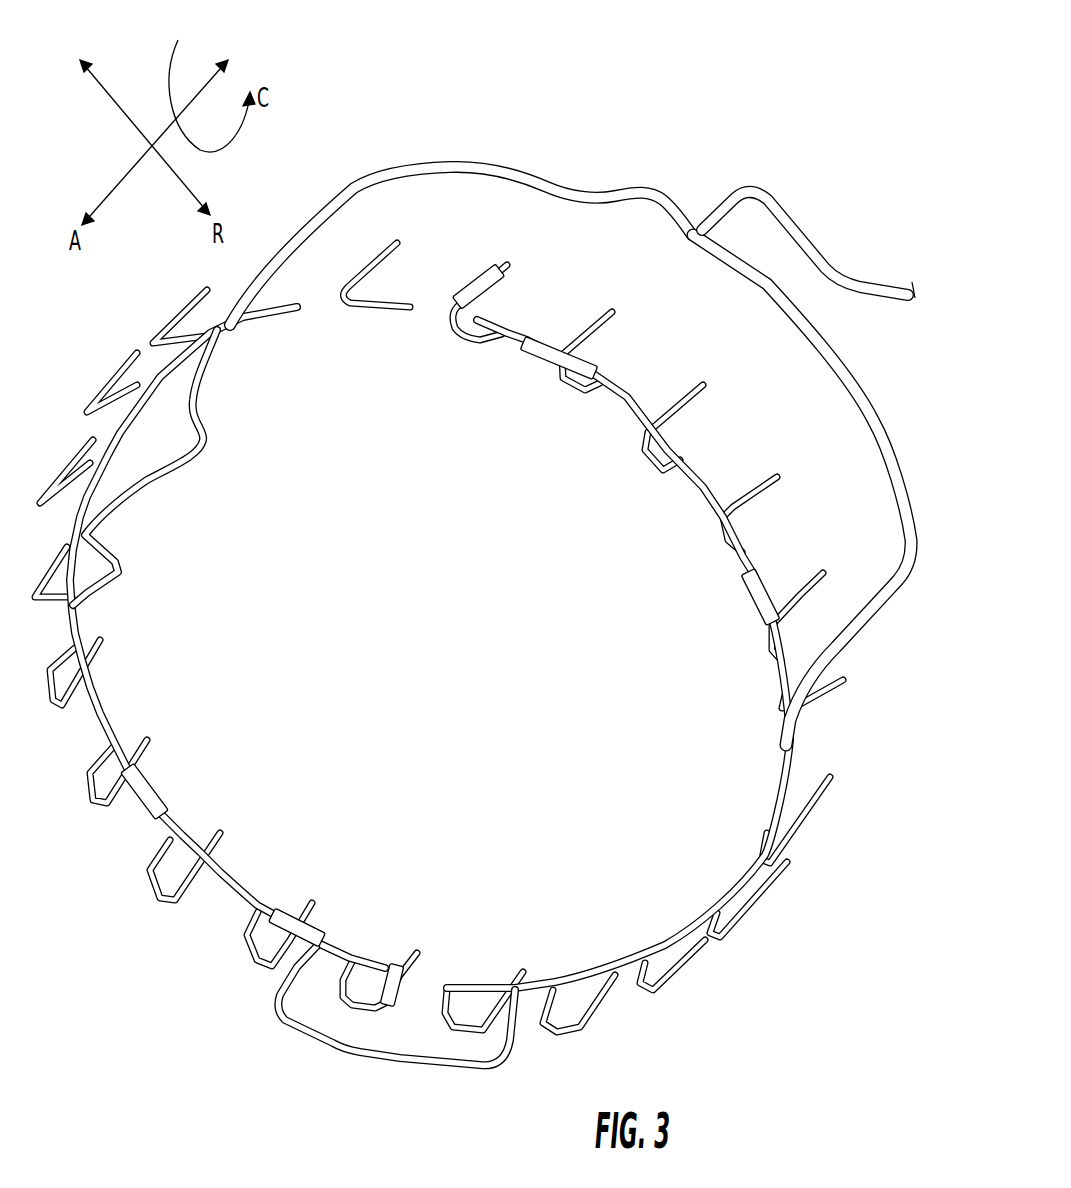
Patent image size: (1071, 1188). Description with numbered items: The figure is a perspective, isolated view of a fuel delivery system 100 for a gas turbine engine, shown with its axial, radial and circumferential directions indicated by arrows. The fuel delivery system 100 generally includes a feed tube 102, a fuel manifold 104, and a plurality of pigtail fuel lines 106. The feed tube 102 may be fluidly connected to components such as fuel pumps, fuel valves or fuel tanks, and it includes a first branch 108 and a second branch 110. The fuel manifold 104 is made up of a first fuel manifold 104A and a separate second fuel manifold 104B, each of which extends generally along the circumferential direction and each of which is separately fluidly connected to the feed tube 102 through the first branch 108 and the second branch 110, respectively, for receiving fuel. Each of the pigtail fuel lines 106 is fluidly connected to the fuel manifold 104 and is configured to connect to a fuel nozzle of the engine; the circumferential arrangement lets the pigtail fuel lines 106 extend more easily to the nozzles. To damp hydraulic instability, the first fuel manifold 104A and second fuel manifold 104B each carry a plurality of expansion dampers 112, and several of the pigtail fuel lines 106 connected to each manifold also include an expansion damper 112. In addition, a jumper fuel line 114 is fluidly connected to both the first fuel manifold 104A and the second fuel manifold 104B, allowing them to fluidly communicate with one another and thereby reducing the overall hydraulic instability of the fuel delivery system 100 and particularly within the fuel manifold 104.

The fuel delivery system 100 is at (491, 584).
The feed tube 102 is at (822, 228).
The fuel manifold 104 is at (470, 659).
The first fuel manifold 104A is at (770, 800).
The second fuel manifold 104B is at (100, 430).
The pigtail fuel line 106 is at (690, 405).
The first branch 108 is at (878, 433).
The second branch 110 is at (437, 160).
The expansion damper 112 is at (475, 284).
The jumper fuel line 114 is at (385, 1060).